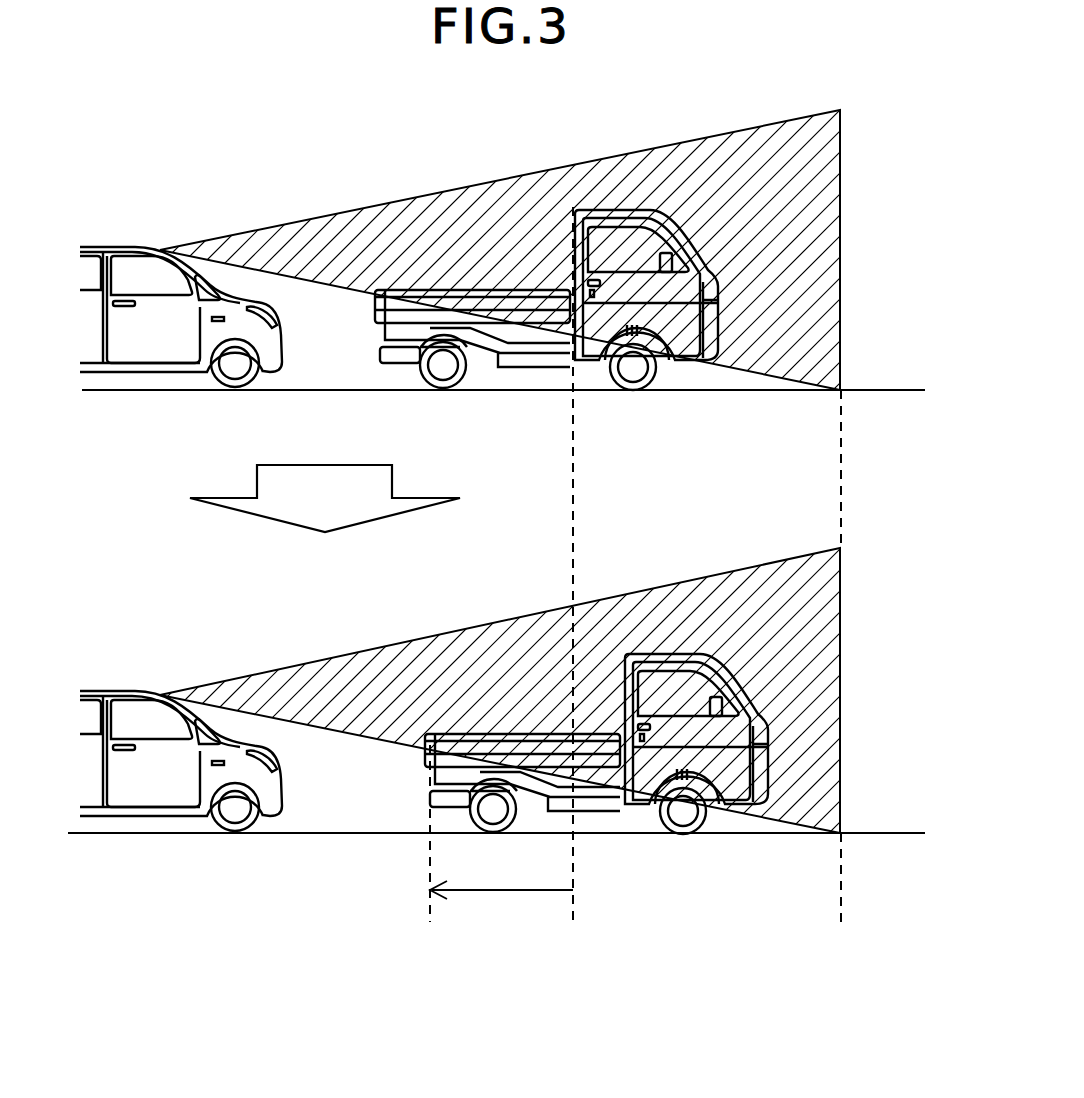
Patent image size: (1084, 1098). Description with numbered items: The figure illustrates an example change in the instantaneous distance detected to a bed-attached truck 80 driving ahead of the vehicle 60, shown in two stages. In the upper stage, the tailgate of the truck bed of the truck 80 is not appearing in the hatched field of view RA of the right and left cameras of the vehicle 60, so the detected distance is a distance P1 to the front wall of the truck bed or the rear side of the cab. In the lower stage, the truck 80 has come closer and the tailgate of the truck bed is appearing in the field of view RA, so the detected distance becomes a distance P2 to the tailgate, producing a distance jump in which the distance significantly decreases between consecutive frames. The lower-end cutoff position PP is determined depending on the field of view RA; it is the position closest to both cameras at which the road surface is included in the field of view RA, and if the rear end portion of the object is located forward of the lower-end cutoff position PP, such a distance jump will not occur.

The vehicle 60 is at (137, 245).
The bed-attached truck 80 is at (627, 209).
The field of view RA is at (825, 148).
The distance to front wall of truck bed or rear side of cab P1 is at (573, 583).
The distance to tailgate of truck bed P2 is at (494, 852).
The lower-end cutoff position PP is at (841, 674).